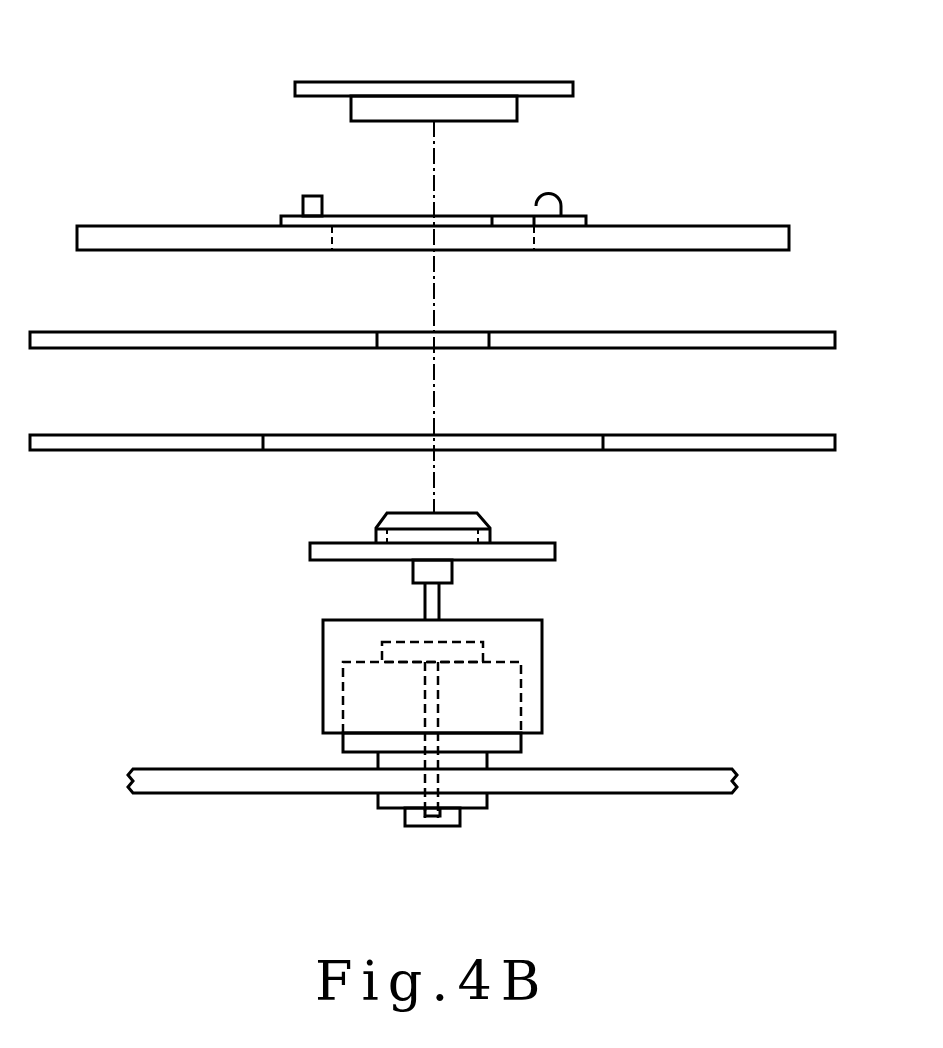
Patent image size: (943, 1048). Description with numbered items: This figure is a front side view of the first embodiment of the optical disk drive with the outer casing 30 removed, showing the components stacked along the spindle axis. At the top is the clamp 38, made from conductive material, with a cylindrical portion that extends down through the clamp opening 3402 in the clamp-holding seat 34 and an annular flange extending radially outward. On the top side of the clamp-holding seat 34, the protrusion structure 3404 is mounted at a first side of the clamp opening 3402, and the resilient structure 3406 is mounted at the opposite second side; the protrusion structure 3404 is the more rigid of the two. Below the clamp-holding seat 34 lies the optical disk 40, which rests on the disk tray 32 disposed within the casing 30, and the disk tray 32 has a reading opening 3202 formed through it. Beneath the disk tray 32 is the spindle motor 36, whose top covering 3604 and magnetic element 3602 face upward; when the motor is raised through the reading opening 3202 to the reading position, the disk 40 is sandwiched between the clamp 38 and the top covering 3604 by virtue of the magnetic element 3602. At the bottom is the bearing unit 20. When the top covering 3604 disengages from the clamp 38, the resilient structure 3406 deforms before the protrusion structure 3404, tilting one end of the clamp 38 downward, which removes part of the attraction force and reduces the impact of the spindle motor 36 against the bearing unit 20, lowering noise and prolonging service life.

The casing 30 is at (736, 72).
The clamp 38 is at (507, 108).
The clamp-holding seat 34 is at (789, 238).
The protrusion structure 3404 is at (302, 200).
The clamp opening 3402 is at (490, 228).
The resilient structure 3406 is at (561, 204).
The optical disk 40 is at (835, 340).
The disk tray 32 is at (835, 443).
The reading opening 3202 is at (497, 430).
The spindle motor 36 is at (562, 705).
The magnetic element 3602 is at (462, 535).
The top covering 3604 is at (480, 532).
The bearing unit 20 is at (453, 812).